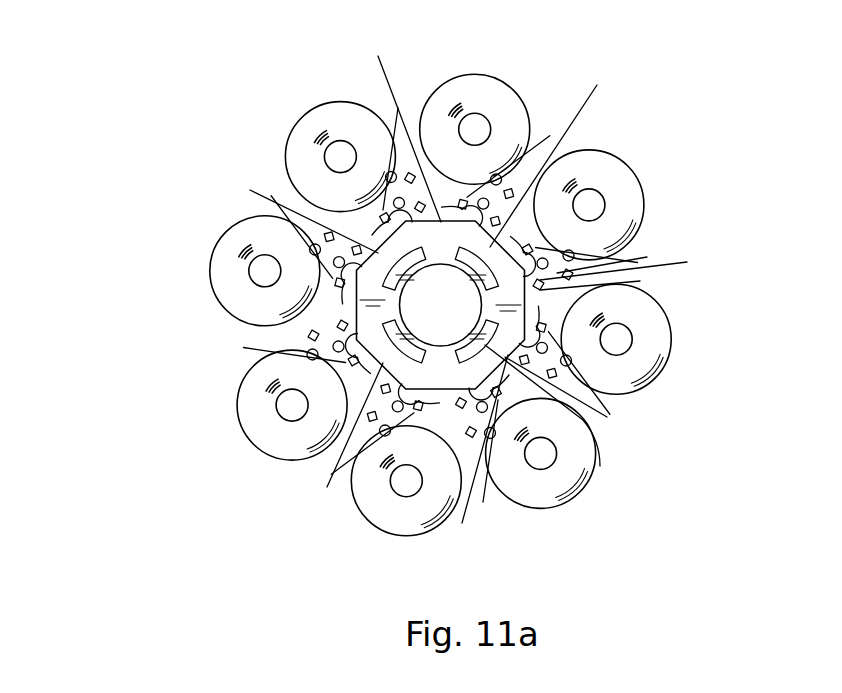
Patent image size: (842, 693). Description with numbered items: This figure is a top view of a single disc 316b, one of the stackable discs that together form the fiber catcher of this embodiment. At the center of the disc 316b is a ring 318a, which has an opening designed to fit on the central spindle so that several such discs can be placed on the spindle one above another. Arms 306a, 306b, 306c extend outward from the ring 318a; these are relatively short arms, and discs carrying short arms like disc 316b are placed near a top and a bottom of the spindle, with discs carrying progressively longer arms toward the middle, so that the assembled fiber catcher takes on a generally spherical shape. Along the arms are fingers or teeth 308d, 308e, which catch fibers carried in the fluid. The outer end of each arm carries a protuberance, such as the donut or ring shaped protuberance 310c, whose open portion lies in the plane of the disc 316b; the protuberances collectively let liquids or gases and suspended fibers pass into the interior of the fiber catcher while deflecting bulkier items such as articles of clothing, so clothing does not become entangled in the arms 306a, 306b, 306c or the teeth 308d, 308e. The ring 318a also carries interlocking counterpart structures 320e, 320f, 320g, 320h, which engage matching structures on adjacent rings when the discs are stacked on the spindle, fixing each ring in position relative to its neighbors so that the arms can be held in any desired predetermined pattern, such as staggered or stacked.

The disc 316b is at (190, 116).
The ring 318a is at (378, 56).
The interlocking counterpart structure 320e is at (250, 190).
The interlocking counterpart structure 320f is at (597, 85).
The interlocking counterpart structure 320g is at (600, 466).
The interlocking counterpart structure 320h is at (327, 487).
The protuberance 310c is at (623, 163).
The arm 306a is at (647, 257).
The arm 306b is at (607, 417).
The arm 306c is at (462, 523).
The finger or tooth 308d is at (618, 283).
The finger or tooth 308e is at (687, 262).